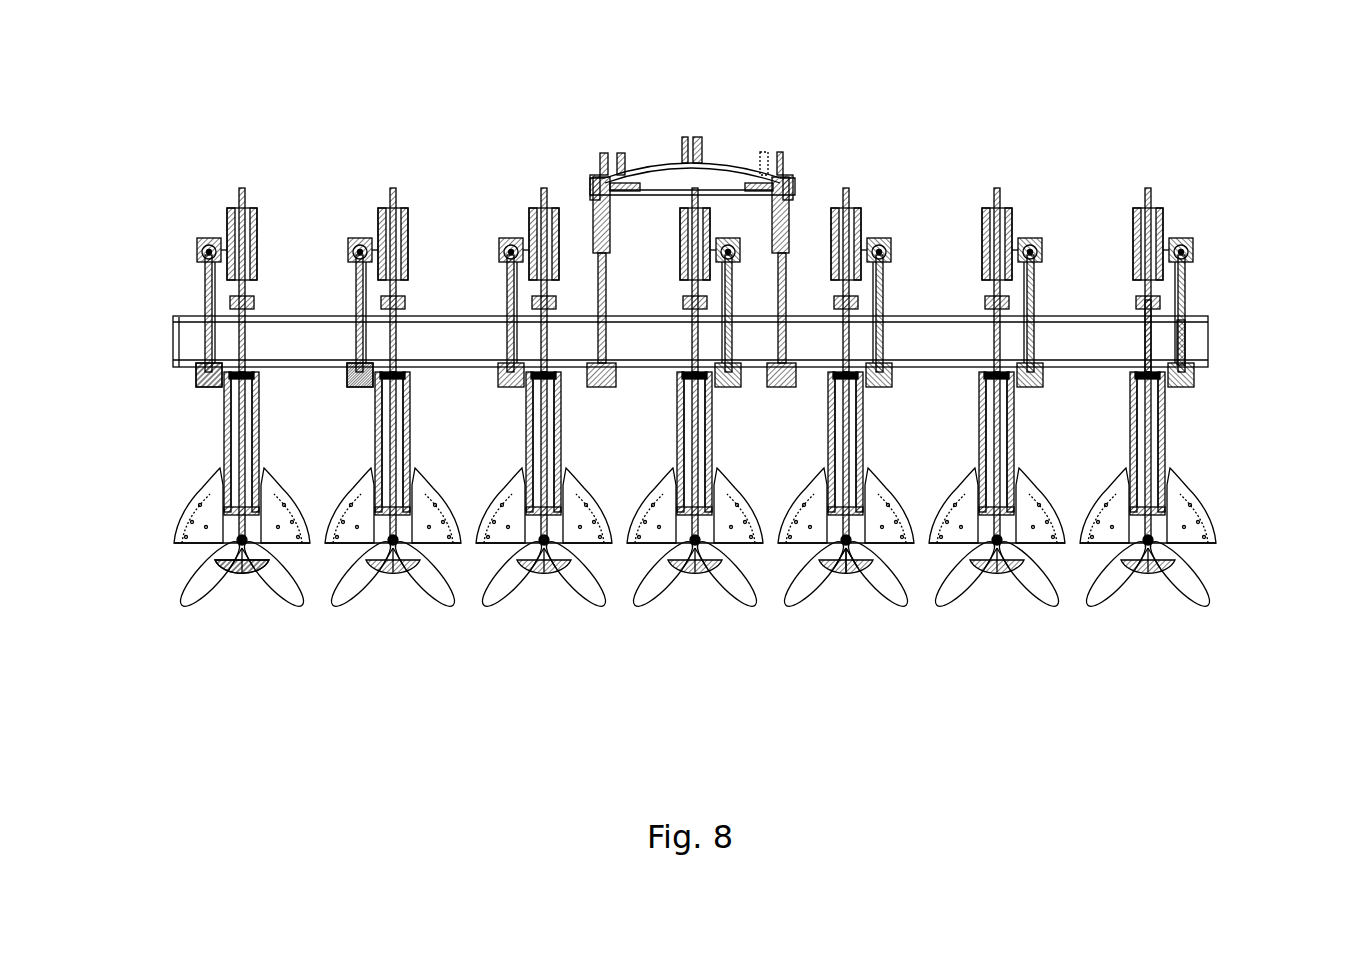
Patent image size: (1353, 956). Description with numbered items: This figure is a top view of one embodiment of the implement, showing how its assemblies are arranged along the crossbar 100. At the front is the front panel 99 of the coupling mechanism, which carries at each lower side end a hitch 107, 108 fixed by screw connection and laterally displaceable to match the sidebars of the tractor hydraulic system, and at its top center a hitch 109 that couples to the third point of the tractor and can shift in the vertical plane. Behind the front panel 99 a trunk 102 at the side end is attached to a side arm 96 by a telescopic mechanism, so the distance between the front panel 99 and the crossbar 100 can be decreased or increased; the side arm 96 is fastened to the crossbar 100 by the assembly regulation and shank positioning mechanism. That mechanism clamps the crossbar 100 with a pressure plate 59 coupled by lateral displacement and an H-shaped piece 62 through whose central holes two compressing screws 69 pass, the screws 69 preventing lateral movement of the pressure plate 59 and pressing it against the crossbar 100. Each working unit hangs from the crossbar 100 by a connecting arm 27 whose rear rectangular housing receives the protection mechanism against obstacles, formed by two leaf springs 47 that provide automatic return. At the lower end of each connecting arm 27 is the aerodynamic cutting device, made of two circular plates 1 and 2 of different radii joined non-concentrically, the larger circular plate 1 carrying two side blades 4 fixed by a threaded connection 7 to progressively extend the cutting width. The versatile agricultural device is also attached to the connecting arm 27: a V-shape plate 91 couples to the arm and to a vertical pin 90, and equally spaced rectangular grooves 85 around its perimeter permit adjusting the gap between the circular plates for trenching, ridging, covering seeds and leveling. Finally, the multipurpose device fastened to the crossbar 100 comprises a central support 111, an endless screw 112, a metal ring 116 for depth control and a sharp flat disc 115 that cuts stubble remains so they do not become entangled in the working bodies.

The circular plate 1 is at (1020, 500).
The lower circular plate 2 is at (1170, 478).
The side blades 4 is at (178, 545).
The threaded connection 7 is at (433, 578).
The connecting arm 27 is at (1140, 340).
The leaf springs 47 is at (222, 448).
The pressure plate 59 is at (190, 368).
The H-shaped piece 62 is at (198, 380).
The compressing screws 69 is at (355, 390).
The grooves 85 is at (260, 580).
The vertical pins 90 is at (1200, 547).
The V-shape plate 91 is at (848, 575).
The side arm 96 is at (605, 285).
The front panel 99 is at (732, 178).
The crossbar 100 is at (288, 342).
The trunk 102 is at (592, 200).
The hitch 107 is at (780, 160).
The hitch 108 is at (600, 152).
The hitch 109 is at (690, 135).
The central support 111 is at (1187, 343).
The endless screw 112 is at (200, 252).
The sharp flat disc 115 is at (247, 190).
The metal ring 116 is at (1140, 207).